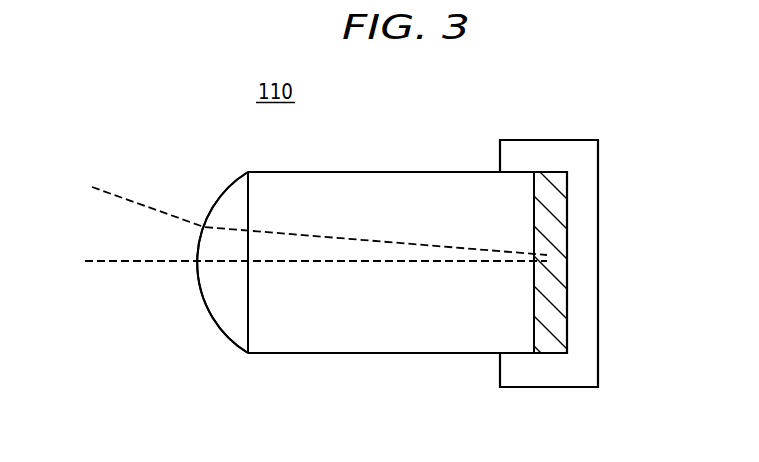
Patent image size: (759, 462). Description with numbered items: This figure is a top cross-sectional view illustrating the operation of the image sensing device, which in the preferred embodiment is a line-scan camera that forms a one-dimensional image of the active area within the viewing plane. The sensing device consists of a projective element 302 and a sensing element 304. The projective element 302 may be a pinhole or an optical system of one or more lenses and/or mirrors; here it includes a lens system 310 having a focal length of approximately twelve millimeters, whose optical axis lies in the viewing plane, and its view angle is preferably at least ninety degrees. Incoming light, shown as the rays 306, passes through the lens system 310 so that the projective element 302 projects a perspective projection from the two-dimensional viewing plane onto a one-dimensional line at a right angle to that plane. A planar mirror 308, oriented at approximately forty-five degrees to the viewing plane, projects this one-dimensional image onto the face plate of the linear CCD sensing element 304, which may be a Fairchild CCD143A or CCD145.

The projective element 302 is at (388, 353).
The sensing element 304 is at (583, 314).
The incoming light rays 306 is at (133, 200).
The planar mirror 308 is at (549, 205).
The lens system 310 is at (225, 192).